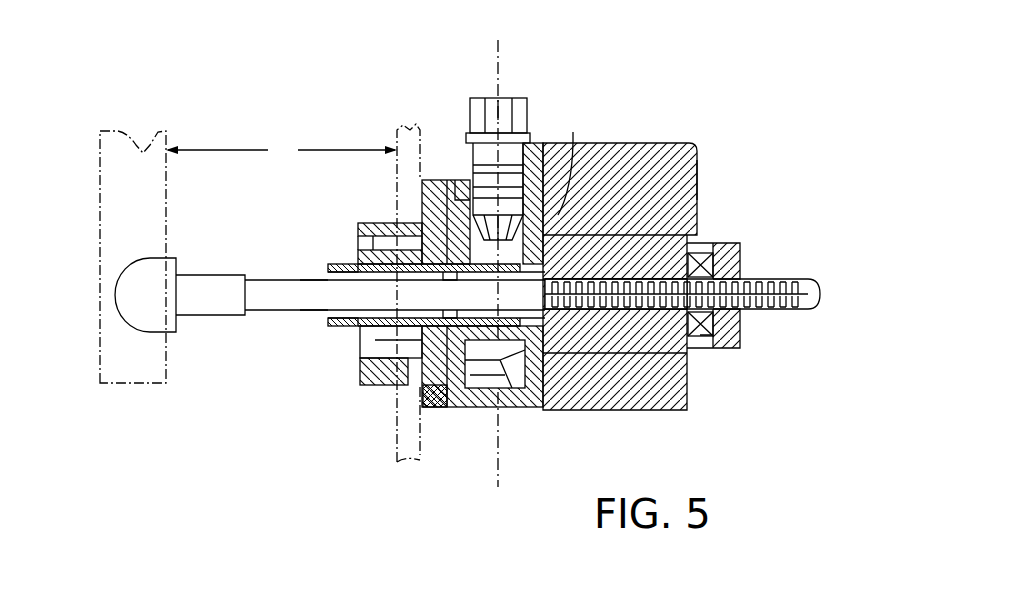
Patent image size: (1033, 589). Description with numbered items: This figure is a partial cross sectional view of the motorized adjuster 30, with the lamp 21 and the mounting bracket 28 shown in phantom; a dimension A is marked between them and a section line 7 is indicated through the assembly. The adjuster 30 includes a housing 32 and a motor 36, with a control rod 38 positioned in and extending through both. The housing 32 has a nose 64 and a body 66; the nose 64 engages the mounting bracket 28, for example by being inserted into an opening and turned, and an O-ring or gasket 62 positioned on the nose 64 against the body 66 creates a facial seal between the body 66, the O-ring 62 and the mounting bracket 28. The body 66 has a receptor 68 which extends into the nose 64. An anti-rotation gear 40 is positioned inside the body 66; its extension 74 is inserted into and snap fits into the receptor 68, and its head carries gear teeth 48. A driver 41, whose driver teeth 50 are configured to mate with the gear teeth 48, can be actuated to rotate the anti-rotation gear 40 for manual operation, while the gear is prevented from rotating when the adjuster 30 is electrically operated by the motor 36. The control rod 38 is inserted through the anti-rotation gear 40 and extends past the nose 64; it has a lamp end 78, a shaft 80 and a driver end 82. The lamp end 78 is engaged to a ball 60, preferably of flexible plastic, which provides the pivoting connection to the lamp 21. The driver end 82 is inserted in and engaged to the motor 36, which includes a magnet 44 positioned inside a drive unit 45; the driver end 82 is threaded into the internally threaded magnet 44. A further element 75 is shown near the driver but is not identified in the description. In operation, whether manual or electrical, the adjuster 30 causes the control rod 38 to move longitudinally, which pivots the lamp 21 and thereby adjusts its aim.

The adjuster 30 is at (262, 70).
The lamp 21 is at (153, 168).
The mounting bracket 28 is at (403, 127).
The section line 7- 7 is at (448, 52).
The dimension A is at (281, 150).
The ball 60 is at (168, 266).
The control rod 38 is at (276, 318).
The lamp end 78 is at (264, 278).
The extension 74 is at (318, 268).
The shaft 80 is at (309, 308).
The anti-rotation gear 40 is at (450, 308).
The receptor 68 is at (348, 262).
The nose 64 is at (385, 372).
The housing 32 is at (540, 412).
The O-ring or gasket 62 is at (435, 408).
The gear teeth 48 is at (507, 345).
The body 66 is at (462, 188).
The driver 41 is at (535, 93).
The bolt flange 75 is at (470, 152).
The driver teeth 50 is at (536, 135).
The motor 36 is at (670, 136).
The drive unit 45 is at (697, 177).
The magnet 44 is at (700, 240).
The driver end 82 is at (750, 285).